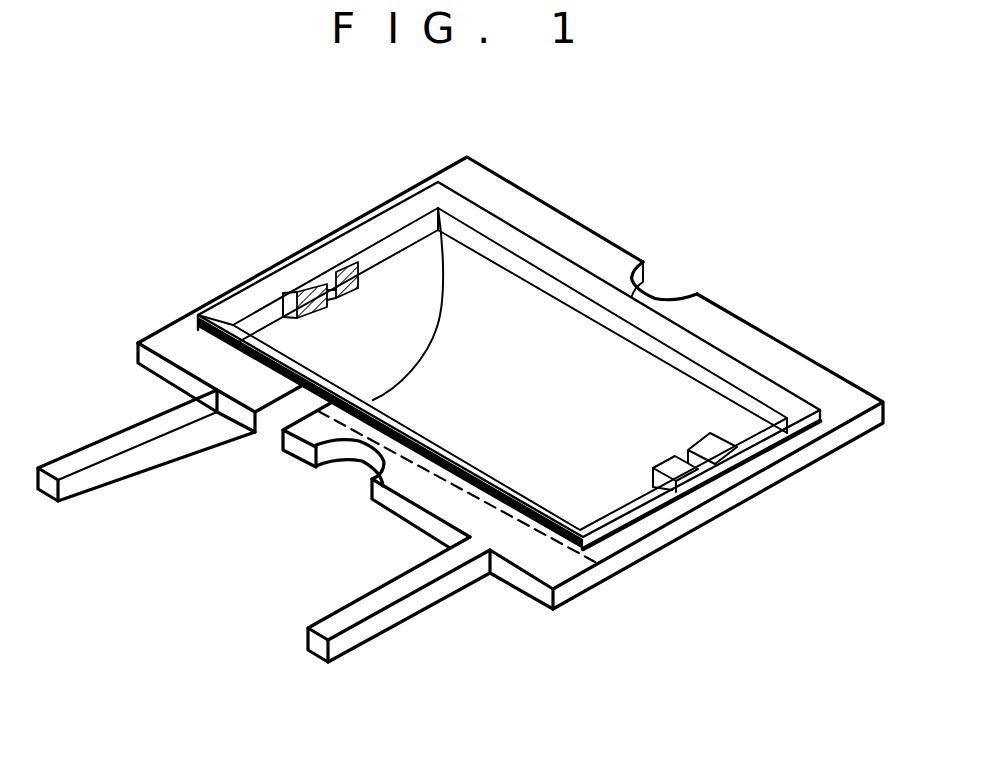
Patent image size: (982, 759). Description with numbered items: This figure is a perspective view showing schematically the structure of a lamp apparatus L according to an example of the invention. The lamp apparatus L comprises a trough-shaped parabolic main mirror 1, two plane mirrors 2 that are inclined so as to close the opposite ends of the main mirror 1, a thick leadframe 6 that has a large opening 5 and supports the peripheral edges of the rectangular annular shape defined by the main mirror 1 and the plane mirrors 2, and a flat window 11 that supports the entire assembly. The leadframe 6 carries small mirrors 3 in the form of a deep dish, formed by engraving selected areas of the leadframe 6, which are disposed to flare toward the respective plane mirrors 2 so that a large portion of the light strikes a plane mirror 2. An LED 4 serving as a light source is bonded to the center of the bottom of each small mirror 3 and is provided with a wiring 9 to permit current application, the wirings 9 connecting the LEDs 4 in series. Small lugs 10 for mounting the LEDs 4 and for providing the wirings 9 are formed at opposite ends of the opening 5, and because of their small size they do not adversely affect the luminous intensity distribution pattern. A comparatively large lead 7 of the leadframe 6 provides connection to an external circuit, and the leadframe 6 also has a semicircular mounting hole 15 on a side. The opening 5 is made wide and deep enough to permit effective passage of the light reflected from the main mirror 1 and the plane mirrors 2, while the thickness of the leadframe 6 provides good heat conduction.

The main mirror 1 is at (662, 410).
The plane mirrors 2 is at (583, 273).
The small mirror 3 is at (417, 322).
The LED 4 is at (353, 263).
The opening 5 is at (517, 492).
The leadframe 6 is at (827, 393).
The lead 7 is at (96, 451).
The wiring 9 is at (345, 290).
The lug 10 is at (343, 268).
The window 11 is at (227, 312).
The mounting hole 15 is at (662, 293).
The lamp apparatus L is at (688, 214).